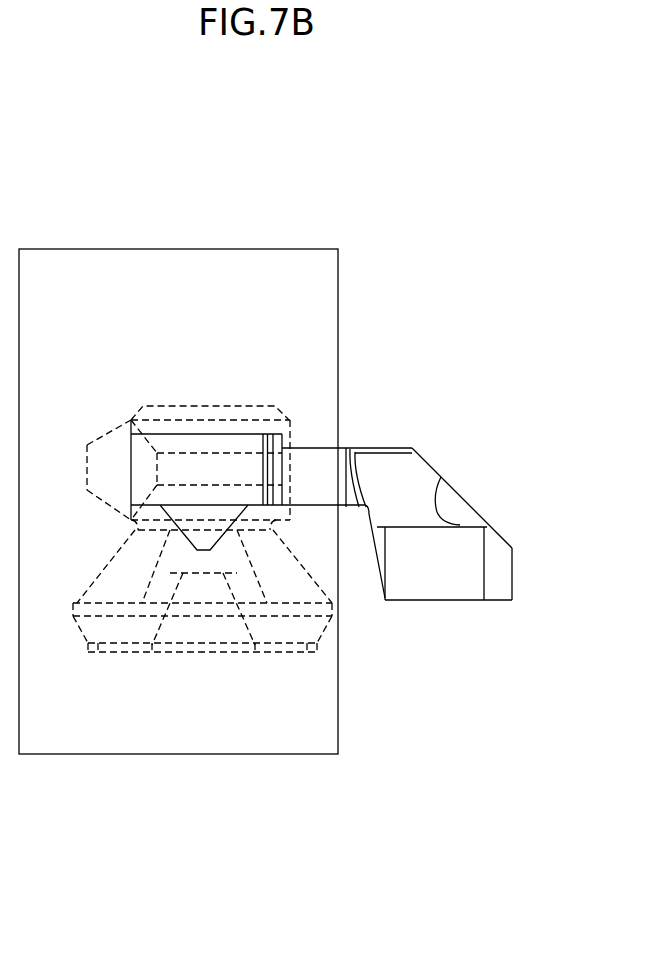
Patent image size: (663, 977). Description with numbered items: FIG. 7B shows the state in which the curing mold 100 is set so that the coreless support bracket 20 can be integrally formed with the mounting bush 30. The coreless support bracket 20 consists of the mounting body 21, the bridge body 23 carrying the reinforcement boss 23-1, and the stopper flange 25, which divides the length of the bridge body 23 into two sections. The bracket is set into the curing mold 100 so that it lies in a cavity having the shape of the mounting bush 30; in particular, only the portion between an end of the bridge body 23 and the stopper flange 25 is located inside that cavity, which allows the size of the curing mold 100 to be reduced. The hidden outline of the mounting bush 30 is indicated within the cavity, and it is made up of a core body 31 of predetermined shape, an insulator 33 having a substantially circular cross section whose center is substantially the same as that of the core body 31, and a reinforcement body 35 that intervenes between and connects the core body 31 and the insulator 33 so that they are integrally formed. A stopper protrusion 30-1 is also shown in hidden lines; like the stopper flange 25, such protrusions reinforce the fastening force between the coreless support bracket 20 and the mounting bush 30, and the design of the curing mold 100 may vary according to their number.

The curing mold 100 is at (182, 282).
The stopper protrusion 30-1 is at (212, 405).
The coreless support bracket 20 is at (485, 297).
The mounting body 21 is at (402, 497).
The bridge body 23 is at (218, 445).
The reinforcement boss 23-1 is at (208, 540).
The stopper flange 25 is at (273, 445).
The mounting bush 30 is at (242, 830).
The core body 31 is at (113, 493).
The insulator 33 is at (197, 610).
The reinforcement body 35 is at (130, 583).